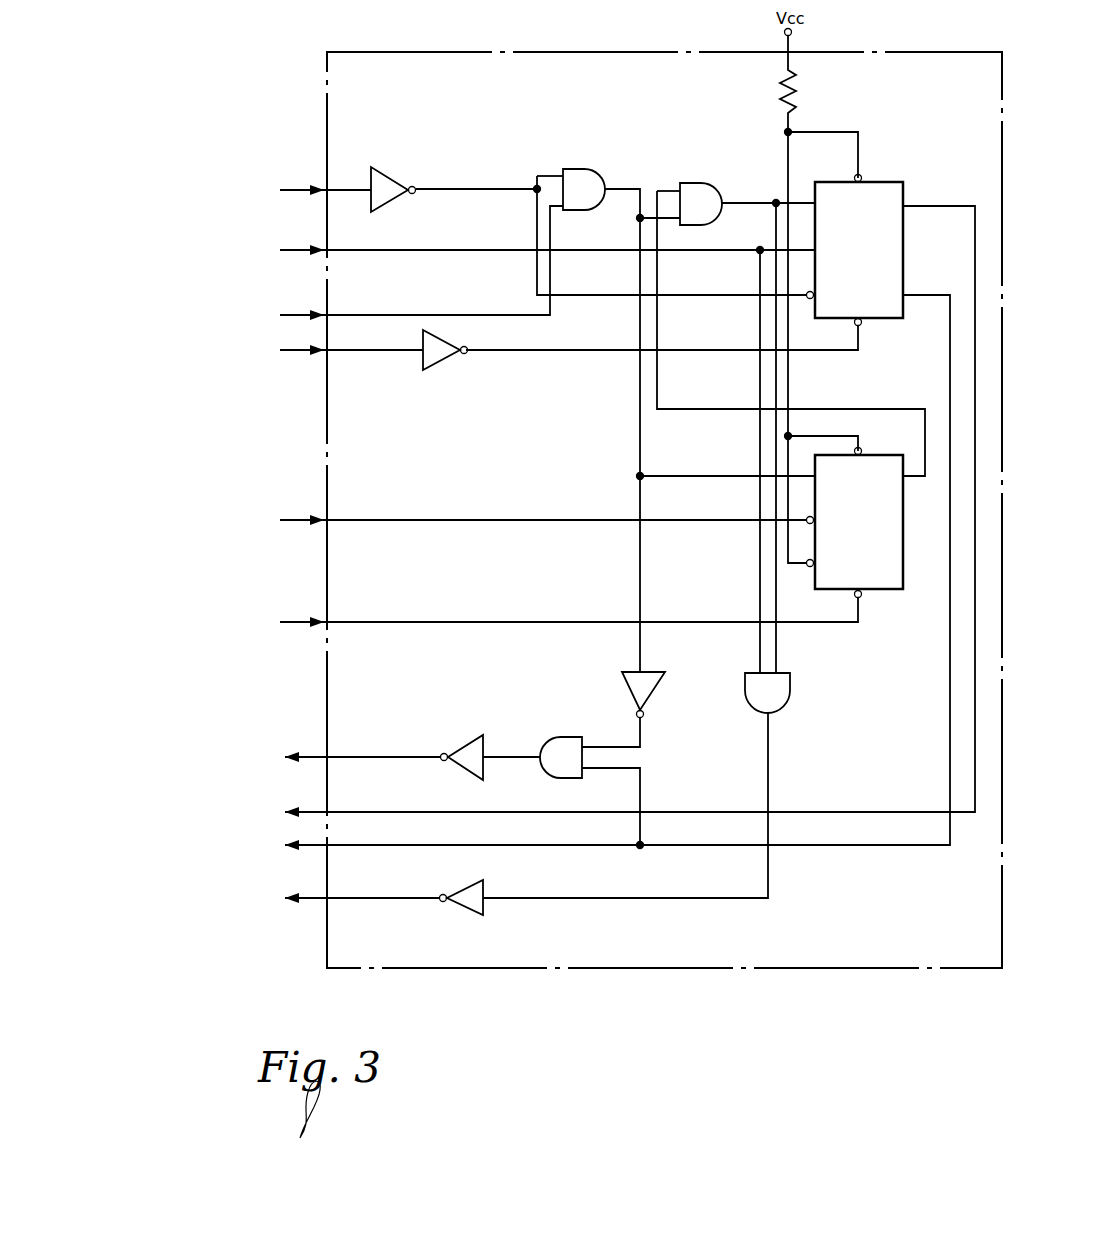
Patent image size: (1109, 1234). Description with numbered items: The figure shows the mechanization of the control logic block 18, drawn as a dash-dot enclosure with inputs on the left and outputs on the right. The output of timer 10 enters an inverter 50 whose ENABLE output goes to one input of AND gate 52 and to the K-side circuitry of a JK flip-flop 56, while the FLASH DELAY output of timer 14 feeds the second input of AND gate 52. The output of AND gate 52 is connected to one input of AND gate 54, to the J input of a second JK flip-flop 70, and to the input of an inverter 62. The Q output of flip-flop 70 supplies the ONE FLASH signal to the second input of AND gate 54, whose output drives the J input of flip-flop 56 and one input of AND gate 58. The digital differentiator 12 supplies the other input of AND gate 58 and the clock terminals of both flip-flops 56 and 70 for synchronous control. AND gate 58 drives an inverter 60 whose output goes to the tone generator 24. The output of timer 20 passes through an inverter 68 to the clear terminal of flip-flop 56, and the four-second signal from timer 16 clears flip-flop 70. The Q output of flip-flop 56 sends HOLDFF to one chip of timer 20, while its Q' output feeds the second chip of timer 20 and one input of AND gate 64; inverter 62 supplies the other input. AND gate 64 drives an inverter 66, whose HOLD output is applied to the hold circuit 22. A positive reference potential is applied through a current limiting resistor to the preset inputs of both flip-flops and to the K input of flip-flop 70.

The timer 10 is at (233, 191).
The digital differentiator 12 is at (455, 387).
The timer 14 is at (329, 267).
The timer 16 is at (476, 615).
The control logic block 18 is at (728, 975).
The timer 20 is at (535, 532).
The hold circuit 22 is at (270, 752).
The tone generator 24 is at (270, 899).
The inverter 50 is at (388, 184).
The AND gate 52 is at (591, 186).
The AND gate 54 is at (704, 197).
The JK flip-flop 56 is at (888, 184).
The AND gate 58 is at (786, 690).
The inverter 60 is at (470, 910).
The inverter 62 is at (650, 688).
The AND gate 64 is at (578, 718).
The inverter 66 is at (468, 744).
The inverter 68 is at (456, 357).
The JK flip-flop 70 is at (886, 583).